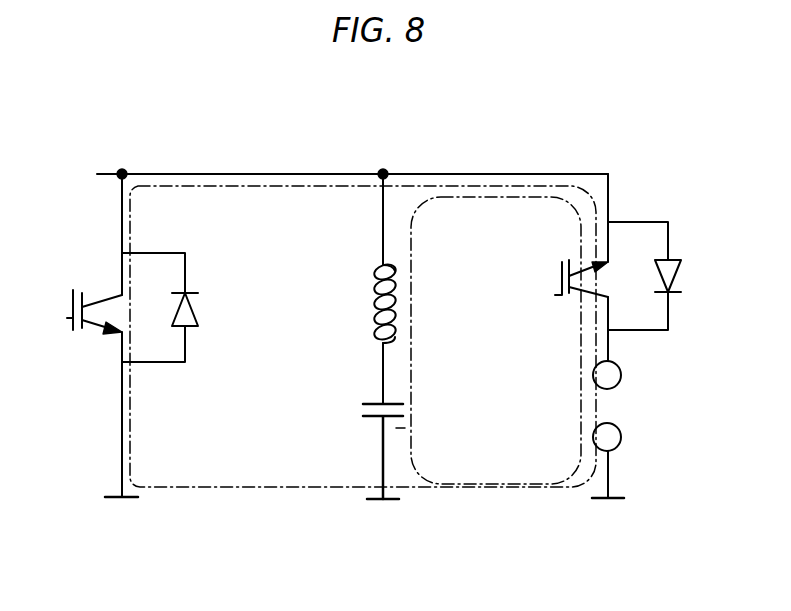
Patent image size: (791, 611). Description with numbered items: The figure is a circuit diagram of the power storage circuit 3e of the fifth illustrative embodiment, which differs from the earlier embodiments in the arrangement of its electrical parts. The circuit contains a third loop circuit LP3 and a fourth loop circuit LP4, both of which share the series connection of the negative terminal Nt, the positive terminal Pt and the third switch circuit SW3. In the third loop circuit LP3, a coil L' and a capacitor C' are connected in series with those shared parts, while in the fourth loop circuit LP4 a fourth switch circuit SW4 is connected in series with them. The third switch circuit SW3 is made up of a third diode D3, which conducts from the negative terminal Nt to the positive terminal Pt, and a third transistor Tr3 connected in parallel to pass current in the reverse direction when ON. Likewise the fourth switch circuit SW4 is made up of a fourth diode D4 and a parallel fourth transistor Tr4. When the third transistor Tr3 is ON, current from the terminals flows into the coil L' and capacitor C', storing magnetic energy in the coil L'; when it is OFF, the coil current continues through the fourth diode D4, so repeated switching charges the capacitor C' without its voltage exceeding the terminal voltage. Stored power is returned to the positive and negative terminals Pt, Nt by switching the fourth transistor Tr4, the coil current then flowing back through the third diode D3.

The power storage circuit 3e is at (542, 148).
The third switch circuit SW3 is at (661, 251).
The fourth switch circuit SW4 is at (185, 283).
The third transistor Tr3 is at (560, 262).
The fourth transistor Tr4 is at (75, 298).
The third diode D3 is at (682, 273).
The fourth diode D4 is at (200, 312).
The coil L' is at (408, 289).
The capacitor C' is at (365, 433).
The third loop circuit LP3 is at (429, 478).
The fourth loop circuit LP4 is at (200, 487).
The positive terminal Pt is at (607, 375).
The negative terminal Nt is at (607, 437).